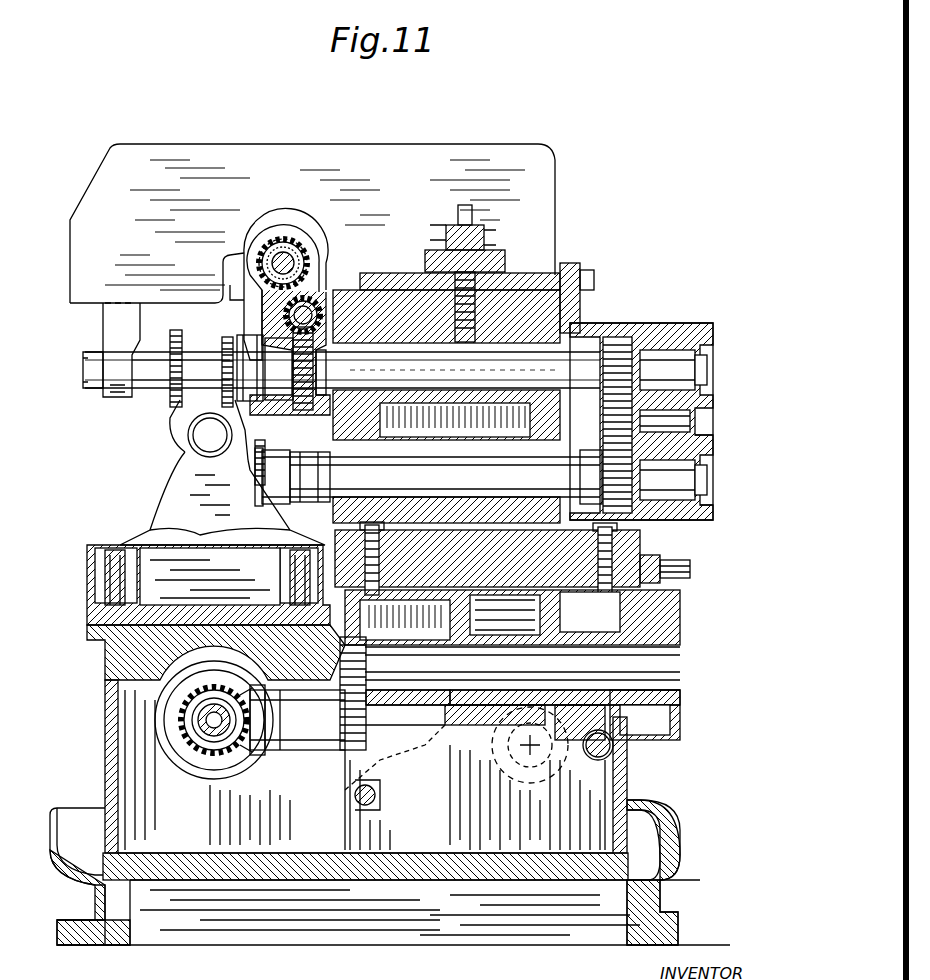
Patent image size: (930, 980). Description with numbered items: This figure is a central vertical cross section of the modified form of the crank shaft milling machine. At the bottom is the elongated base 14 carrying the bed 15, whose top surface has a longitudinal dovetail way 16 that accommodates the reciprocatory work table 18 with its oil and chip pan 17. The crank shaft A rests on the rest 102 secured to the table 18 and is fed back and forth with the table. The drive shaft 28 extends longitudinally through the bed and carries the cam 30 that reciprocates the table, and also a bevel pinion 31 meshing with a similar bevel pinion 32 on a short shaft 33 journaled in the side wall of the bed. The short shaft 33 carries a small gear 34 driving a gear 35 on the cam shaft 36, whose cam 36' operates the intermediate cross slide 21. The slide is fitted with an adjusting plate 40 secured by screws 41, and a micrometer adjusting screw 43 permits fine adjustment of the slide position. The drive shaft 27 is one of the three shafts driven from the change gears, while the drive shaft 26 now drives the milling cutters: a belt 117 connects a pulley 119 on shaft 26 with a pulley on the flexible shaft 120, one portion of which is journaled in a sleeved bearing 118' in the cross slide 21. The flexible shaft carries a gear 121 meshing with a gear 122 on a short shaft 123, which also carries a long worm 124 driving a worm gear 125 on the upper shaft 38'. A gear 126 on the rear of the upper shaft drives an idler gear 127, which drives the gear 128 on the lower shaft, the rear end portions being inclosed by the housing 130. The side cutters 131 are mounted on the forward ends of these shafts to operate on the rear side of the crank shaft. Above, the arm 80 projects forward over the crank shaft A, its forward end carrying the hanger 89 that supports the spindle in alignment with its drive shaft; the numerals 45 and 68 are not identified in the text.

The arm 80 is at (198, 250).
The sleeved bearing 118' is at (253, 249).
The gear 121 is at (290, 250).
The flexible shaft 120 is at (245, 255).
The worm 124 is at (245, 298).
The gear 122 is at (325, 300).
The hanger 89 is at (104, 328).
The shaft 45 is at (185, 337).
The short shaft 123 is at (264, 332).
The worm gear 125 is at (320, 362).
The upper shaft 38' is at (342, 292).
The intermediate cross slide 21 is at (578, 320).
The gear 126 is at (615, 360).
The idler gear 127 is at (690, 420).
The housing 130 is at (700, 442).
The gear 128 is at (680, 508).
The crank shaft A is at (178, 428).
The rest 102 is at (178, 490).
The side cutter 131 is at (253, 490).
The screws 41 is at (338, 538).
The micrometer adjusting screw 43 is at (612, 532).
The oil and chip pan 17 is at (88, 592).
The work table 18 is at (180, 612).
The dovetail way 16 is at (125, 657).
The adjusting plate 40 is at (552, 600).
The cam 30 is at (160, 693).
The drive shaft 28 is at (200, 712).
The cam shaft 36 is at (522, 693).
The short shaft 33 is at (292, 720).
The gear 35 is at (370, 700).
The belt 117 is at (395, 757).
The small gear 34 is at (385, 735).
The drive shaft 27 is at (377, 790).
The drive shaft 26 is at (505, 748).
The pulley 119 is at (518, 770).
The cam 36' is at (580, 722).
The screw 68 is at (608, 752).
The bevel pinion 31 is at (185, 745).
The bevel pinion 32 is at (214, 734).
The bed 15 is at (366, 766).
The base 14 is at (105, 888).